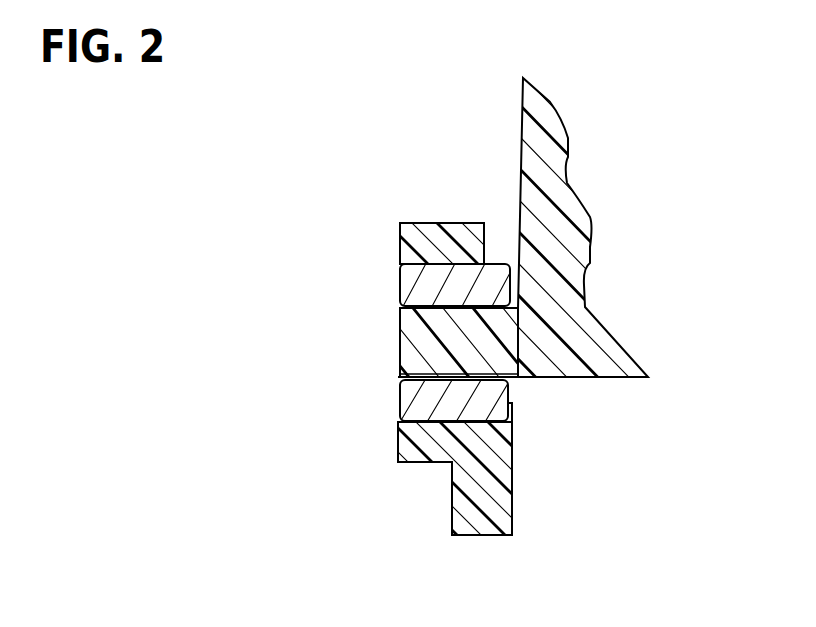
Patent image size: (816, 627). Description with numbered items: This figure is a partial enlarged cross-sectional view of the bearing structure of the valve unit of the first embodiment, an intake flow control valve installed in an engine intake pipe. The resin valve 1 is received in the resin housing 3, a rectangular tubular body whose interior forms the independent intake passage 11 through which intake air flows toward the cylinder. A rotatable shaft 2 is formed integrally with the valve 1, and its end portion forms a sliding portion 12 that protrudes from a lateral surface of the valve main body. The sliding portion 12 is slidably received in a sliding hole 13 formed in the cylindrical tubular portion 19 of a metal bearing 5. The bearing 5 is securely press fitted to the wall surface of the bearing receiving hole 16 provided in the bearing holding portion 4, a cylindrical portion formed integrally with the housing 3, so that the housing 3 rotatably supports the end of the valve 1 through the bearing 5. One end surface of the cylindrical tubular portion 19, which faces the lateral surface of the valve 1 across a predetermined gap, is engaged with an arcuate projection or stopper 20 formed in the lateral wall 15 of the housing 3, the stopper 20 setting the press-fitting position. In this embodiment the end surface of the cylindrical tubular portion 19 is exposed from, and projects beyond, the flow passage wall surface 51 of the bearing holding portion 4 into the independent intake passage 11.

The valve 1 is at (518, 95).
The independent intake passage 11 is at (573, 446).
The sliding portion 12 is at (426, 236).
The sliding hole 13 is at (423, 373).
The bearing receiving hole 16 is at (412, 275).
The rotatable shaft 2 is at (410, 340).
The arcuate projection (stopper) 20 is at (513, 403).
The housing 3 is at (506, 500).
The lateral wall 15 is at (478, 523).
The bearing holding portion 4 is at (413, 230).
The bearing 5 is at (402, 412).
The cylindrical tubular portion 19 is at (407, 398).
The flow passage wall surface 51 is at (487, 242).